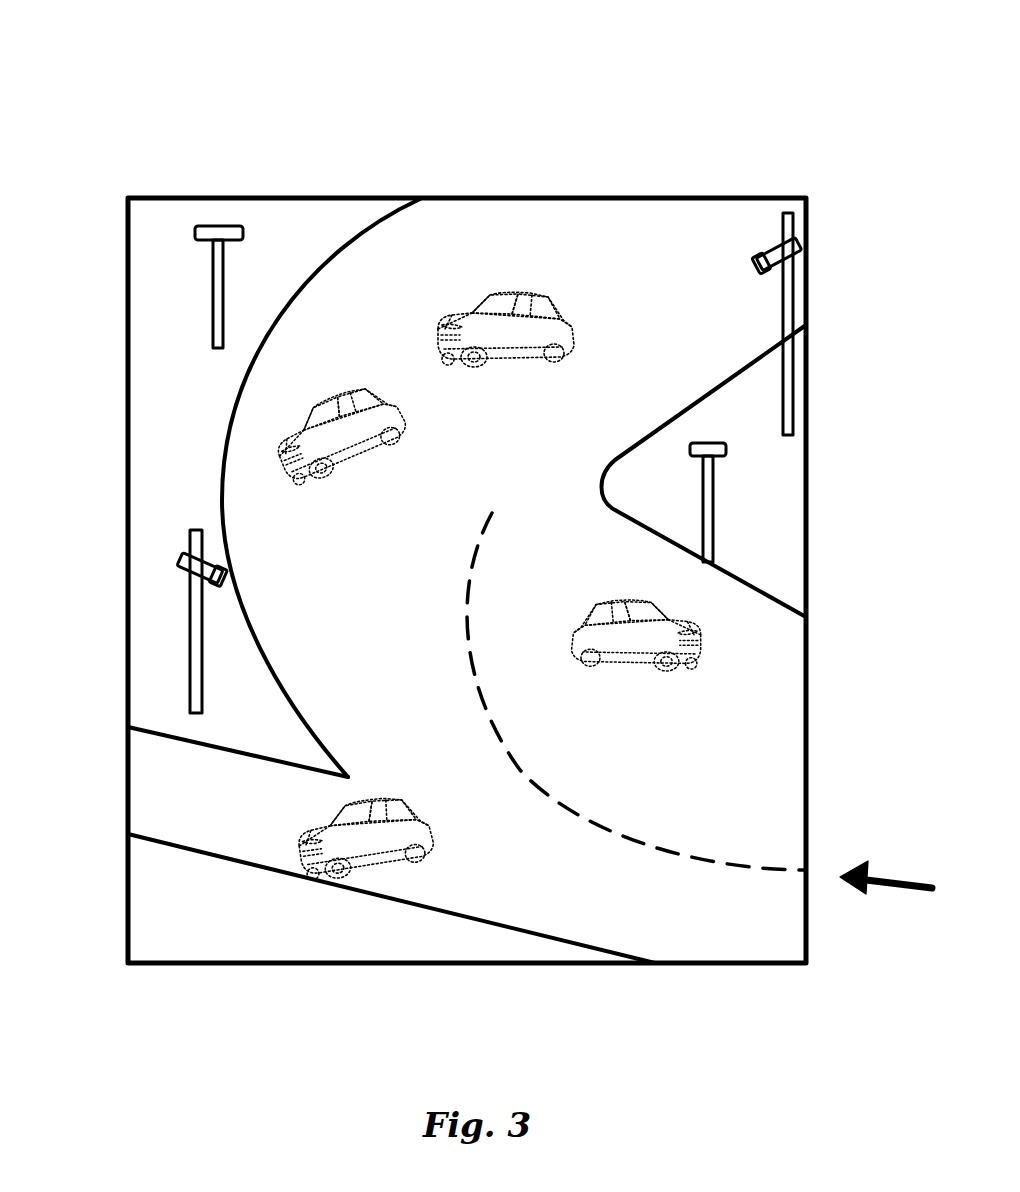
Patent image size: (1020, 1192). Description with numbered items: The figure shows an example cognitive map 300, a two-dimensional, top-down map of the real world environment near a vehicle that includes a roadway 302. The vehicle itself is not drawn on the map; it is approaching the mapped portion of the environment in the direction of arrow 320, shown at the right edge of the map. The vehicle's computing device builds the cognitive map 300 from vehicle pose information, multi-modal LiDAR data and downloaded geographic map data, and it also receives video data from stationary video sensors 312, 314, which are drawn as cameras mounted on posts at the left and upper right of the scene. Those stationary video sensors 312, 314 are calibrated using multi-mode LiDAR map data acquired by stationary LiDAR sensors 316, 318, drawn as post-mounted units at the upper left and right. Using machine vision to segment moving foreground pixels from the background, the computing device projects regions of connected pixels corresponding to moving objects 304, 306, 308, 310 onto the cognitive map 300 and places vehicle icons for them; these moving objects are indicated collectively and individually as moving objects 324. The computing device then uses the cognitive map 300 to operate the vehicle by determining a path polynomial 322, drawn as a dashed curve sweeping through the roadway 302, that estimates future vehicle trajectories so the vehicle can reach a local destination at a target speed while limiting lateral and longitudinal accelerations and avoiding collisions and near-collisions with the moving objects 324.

The cognitive map 300 is at (498, 26).
The roadway 302 is at (714, 917).
The moving object 304 is at (325, 858).
The moving object 306 is at (710, 645).
The moving object 308 is at (503, 287).
The moving object 310 is at (270, 452).
The stationary video sensor 312 is at (178, 566).
The stationary video sensor 314 is at (778, 250).
The stationary LiDAR sensor 316 is at (218, 226).
The stationary LiDAR sensor 318 is at (726, 455).
The arrow 320 is at (882, 895).
The path polynomial 322 is at (571, 811).
The moving objects 324 is at (655, 268).